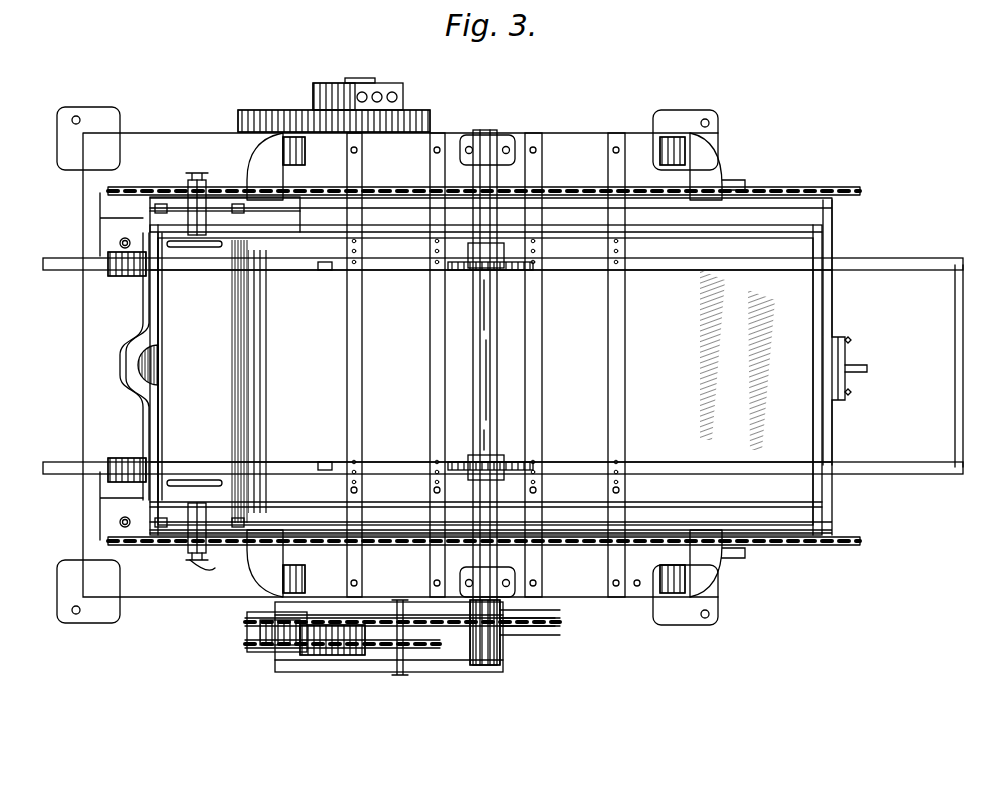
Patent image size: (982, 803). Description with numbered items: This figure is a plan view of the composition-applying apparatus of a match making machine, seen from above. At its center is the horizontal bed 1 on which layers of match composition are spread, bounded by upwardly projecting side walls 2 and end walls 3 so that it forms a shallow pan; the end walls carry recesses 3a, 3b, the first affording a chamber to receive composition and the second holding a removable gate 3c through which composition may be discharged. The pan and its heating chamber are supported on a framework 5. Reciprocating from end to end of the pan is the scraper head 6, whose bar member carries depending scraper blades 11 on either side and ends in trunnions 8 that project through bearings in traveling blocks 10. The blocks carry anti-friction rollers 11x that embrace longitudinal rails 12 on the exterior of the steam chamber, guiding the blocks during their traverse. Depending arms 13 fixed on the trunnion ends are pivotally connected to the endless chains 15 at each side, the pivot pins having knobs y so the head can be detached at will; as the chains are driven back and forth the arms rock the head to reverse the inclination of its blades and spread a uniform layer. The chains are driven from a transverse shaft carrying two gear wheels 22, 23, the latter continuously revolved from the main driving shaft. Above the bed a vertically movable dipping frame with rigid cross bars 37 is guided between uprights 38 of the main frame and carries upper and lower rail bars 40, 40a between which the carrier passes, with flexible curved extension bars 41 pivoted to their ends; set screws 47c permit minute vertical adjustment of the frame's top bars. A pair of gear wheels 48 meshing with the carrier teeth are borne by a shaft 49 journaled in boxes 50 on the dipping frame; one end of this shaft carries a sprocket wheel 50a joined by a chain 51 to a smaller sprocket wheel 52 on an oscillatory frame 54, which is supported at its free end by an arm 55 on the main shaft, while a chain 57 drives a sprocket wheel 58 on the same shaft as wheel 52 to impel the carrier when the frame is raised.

The horizontal bed 1 is at (737, 360).
The side walls 2 is at (697, 236).
The end walls 3 is at (142, 427).
The recess or offset 3a is at (138, 368).
The recess or offset 3b is at (836, 357).
The removable gate 3c is at (848, 378).
The framework 5 is at (83, 336).
The scraper head 6 is at (192, 366).
The trunnions 8 is at (205, 234).
The traveling blocks 10 is at (176, 197).
The scraper blades 11 is at (236, 378).
The anti-friction rollers 11x is at (256, 520).
The longitudinal rails 12 is at (826, 218).
The depending arms 13 is at (197, 180).
The endless chains 15 is at (790, 195).
The gear wheel 22 is at (108, 476).
The gear wheel 23 is at (108, 268).
The cross bars 37 is at (347, 410).
The uprights 38 is at (280, 598).
The upper rail bars 40 is at (388, 270).
The lower rail bars 40a is at (325, 462).
The curved extension bars 41 is at (903, 262).
The set screws 47c is at (636, 590).
The gear wheels 48 is at (448, 265).
The shaft 49 is at (480, 358).
The boxes 50 is at (497, 137).
The sprocket wheel 50a is at (522, 627).
The chain 51 is at (556, 630).
The sprocket wheel 52 is at (255, 625).
The oscillatory frame 54 is at (374, 665).
The arm 55 is at (330, 655).
The chain 57 is at (427, 650).
The sprocket wheel 58 is at (270, 652).
The knobs y is at (211, 575).